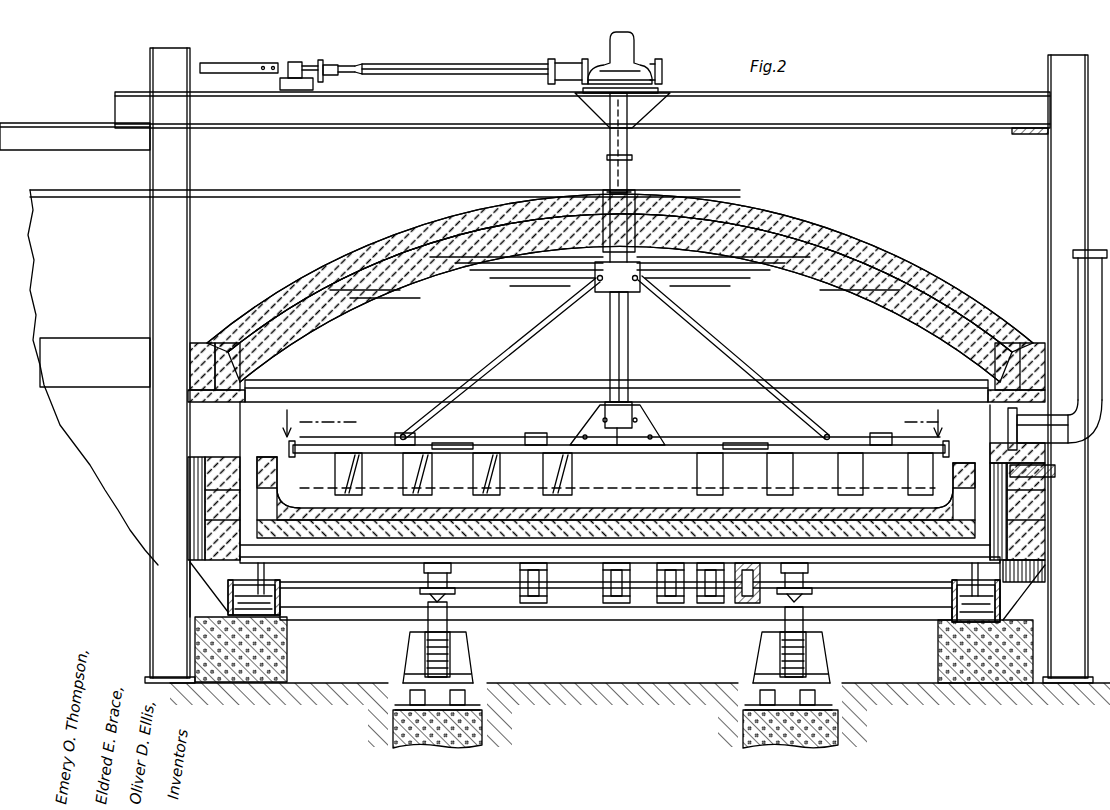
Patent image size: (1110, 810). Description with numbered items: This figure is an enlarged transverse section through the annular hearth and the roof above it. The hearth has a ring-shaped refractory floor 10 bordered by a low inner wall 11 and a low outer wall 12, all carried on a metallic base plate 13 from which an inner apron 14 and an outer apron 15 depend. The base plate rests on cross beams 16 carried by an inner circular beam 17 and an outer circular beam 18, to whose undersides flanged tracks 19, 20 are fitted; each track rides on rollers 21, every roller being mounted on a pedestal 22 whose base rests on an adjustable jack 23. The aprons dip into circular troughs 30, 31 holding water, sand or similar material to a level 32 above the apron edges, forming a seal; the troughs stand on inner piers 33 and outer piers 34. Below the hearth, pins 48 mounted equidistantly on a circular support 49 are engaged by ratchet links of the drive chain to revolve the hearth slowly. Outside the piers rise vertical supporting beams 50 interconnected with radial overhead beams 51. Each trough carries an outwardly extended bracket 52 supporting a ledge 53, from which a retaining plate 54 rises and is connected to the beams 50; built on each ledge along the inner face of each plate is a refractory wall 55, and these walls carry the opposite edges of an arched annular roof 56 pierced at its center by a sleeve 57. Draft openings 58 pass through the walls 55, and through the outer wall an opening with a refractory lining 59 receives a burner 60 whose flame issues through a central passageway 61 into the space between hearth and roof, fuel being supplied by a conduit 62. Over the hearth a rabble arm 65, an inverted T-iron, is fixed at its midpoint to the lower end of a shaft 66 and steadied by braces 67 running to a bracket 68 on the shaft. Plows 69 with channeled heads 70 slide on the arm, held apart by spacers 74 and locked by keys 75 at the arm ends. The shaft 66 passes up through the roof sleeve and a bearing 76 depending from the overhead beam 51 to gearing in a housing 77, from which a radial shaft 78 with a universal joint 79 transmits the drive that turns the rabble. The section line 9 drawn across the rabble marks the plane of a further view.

The section line 9 is at (605, 423).
The ring-shaped floor 10 is at (608, 508).
The inner low wall 11 is at (277, 494).
The outer low wall 12 is at (953, 490).
The metallic base plate 13 is at (468, 545).
The inner apron 14 is at (268, 578).
The outer apron 15 is at (955, 578).
The cross beams 16 is at (860, 563).
The inner circular beam 17 is at (424, 569).
The outer circular beam 18 is at (805, 585).
The inner circular flanged track 19 is at (420, 592).
The outer circular flanged track 20 is at (808, 598).
The rollers 21 is at (447, 625).
The pedestal 22 is at (462, 662).
The jacks 23 is at (420, 700).
The inner circular trough 30 is at (283, 612).
The outer circular trough 31 is at (945, 603).
The level 32 is at (230, 582).
The inner piers 33 is at (290, 660).
The outer piers 34 is at (938, 660).
The pins 48 is at (603, 586).
The circular support 49 is at (760, 580).
The supporting beams 50 is at (150, 250).
The overhead beams 51 is at (240, 125).
The bracket 52 is at (1025, 590).
The ledge 53 is at (1035, 572).
The retaining plate 54 is at (188, 490).
The wall 55 is at (188, 512).
The arched annular roof 56 is at (385, 242).
The sleeve 57 is at (640, 196).
The draft openings 58 is at (205, 423).
The lining 59 is at (995, 452).
The burner 60 is at (1049, 429).
The central passageway 61 is at (1000, 430).
The conduit 62 is at (1078, 330).
The arm 65 is at (490, 436).
The shaft 66 is at (628, 345).
The supporting braces 67 is at (520, 340).
The bracket 68 is at (600, 292).
The plows 69 is at (403, 479).
The channeled head 70 is at (476, 447).
The intermediate spacers 74 is at (383, 436).
The keys 75 is at (289, 447).
The bearing 76 is at (632, 150).
The housing 77 is at (632, 60).
The shaft 78 is at (473, 65).
The universal joint 79 is at (325, 62).